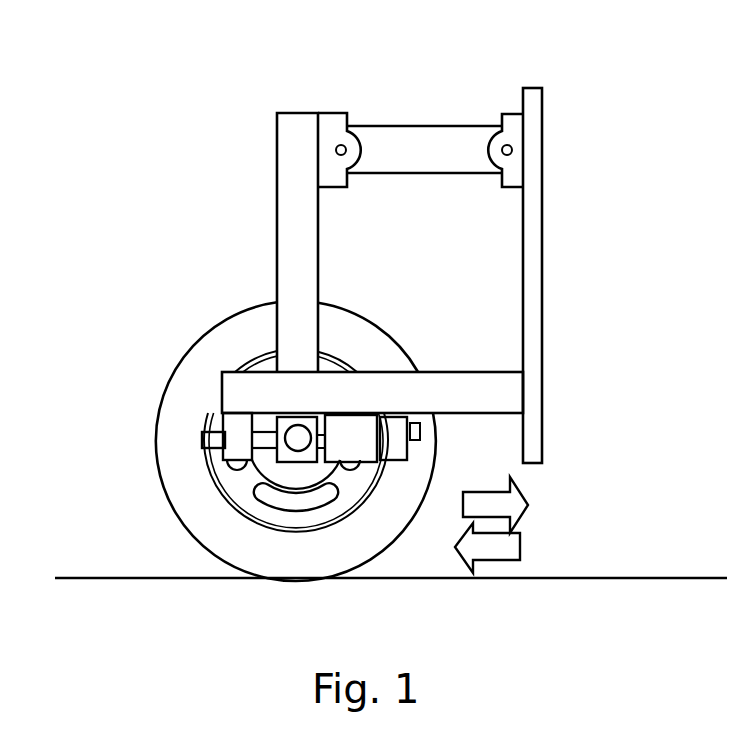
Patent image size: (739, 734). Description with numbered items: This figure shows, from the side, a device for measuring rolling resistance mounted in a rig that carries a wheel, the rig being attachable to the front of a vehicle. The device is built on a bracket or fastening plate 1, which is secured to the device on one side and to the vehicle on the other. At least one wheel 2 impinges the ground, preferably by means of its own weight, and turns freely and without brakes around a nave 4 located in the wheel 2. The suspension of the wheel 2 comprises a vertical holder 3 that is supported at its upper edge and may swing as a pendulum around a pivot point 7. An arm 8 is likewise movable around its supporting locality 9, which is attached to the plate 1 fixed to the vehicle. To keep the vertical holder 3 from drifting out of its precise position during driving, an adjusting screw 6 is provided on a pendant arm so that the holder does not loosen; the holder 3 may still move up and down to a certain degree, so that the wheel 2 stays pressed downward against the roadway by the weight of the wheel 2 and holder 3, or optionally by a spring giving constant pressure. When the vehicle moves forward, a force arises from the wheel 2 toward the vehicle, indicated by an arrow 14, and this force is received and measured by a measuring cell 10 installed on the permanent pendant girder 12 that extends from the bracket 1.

The fastening plate 1 is at (532, 228).
The wheel 2 is at (163, 496).
The vertical holder 3 is at (302, 240).
The nave 4 is at (283, 478).
The adjusting screw 6 is at (198, 438).
The pivot point 7 is at (330, 127).
The arm 8 is at (407, 142).
The supporting locality 9 is at (513, 130).
The measuring cell 10 is at (350, 458).
The pendant girder 12 is at (440, 385).
The arrow 14 is at (535, 525).